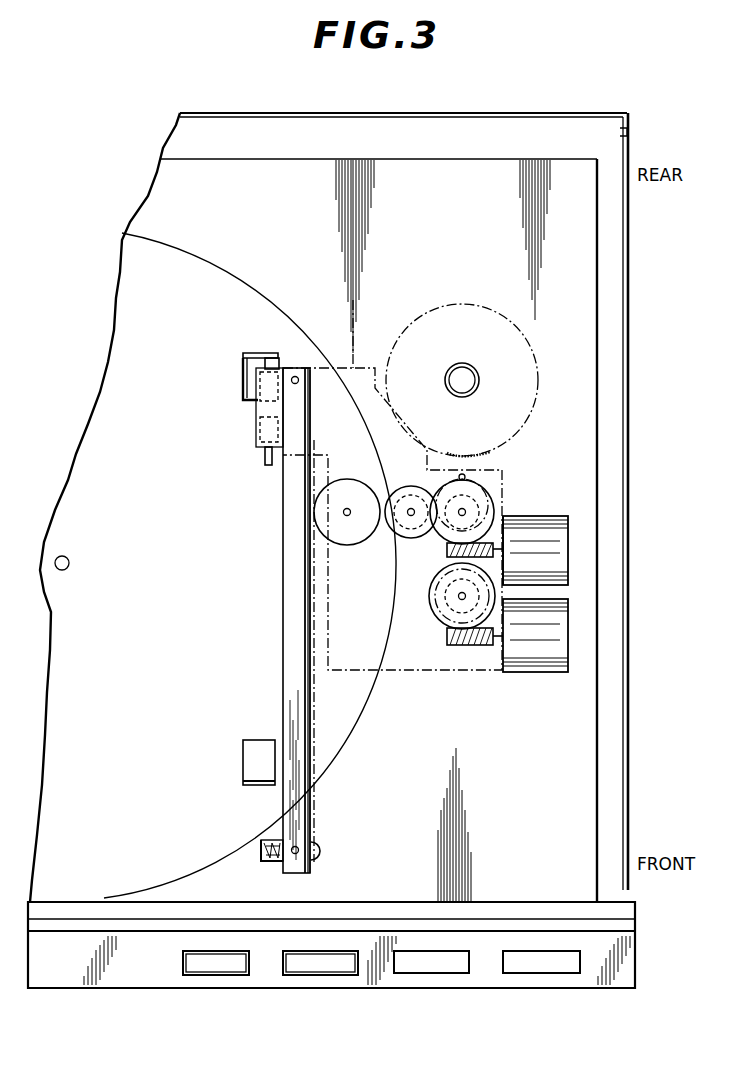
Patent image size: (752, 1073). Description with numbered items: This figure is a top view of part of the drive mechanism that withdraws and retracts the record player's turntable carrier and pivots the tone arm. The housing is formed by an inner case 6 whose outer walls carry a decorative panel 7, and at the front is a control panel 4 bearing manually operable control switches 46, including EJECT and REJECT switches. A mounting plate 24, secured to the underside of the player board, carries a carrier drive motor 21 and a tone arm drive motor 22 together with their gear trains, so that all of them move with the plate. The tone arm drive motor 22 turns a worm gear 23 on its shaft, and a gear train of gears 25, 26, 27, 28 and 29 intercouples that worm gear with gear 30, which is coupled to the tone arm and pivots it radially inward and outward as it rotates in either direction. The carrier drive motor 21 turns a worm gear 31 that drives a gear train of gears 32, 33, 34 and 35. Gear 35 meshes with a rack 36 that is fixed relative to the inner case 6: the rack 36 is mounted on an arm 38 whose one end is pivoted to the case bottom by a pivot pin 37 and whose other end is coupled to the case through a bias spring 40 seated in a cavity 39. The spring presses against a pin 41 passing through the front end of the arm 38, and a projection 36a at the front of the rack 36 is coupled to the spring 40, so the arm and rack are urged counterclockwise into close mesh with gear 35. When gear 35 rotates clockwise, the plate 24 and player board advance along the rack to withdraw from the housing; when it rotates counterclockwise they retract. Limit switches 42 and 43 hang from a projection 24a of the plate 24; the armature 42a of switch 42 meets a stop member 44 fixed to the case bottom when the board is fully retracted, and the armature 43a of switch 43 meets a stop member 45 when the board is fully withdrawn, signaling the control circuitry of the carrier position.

The control panel 4 is at (636, 952).
The inner case 6 is at (598, 763).
The decorative panel 7 is at (628, 718).
The carrier drive motor 21 is at (555, 553).
The tone arm drive motor 22 is at (555, 634).
The worm gear 23 is at (470, 648).
The mounting plate 24 is at (369, 367).
The projection 24a is at (260, 410).
The gear 25 is at (448, 647).
The gear 26 is at (447, 612).
The gear 27 is at (447, 551).
The gear 28 is at (492, 480).
The gear 29 is at (475, 458).
The gear 30 is at (524, 380).
The worm gear 31 is at (505, 522).
The gear 32 is at (490, 508).
The gear 33 is at (410, 502).
The gear 34 is at (380, 522).
The gear 35 is at (347, 486).
The rack 36 is at (312, 708).
The projection 36a is at (322, 858).
The pivot pin 37 is at (297, 376).
The arm 38 is at (283, 533).
The cavity 39 is at (262, 852).
The bias spring 40 is at (266, 860).
The pin 41 is at (299, 848).
The limit switch 42 is at (268, 390).
The movable armature 42a is at (267, 360).
The limit switch 43 is at (262, 436).
The movable armature 43a is at (267, 464).
The stop member 44 is at (245, 352).
The stop member 45 is at (250, 787).
The control switches 46 is at (207, 976).